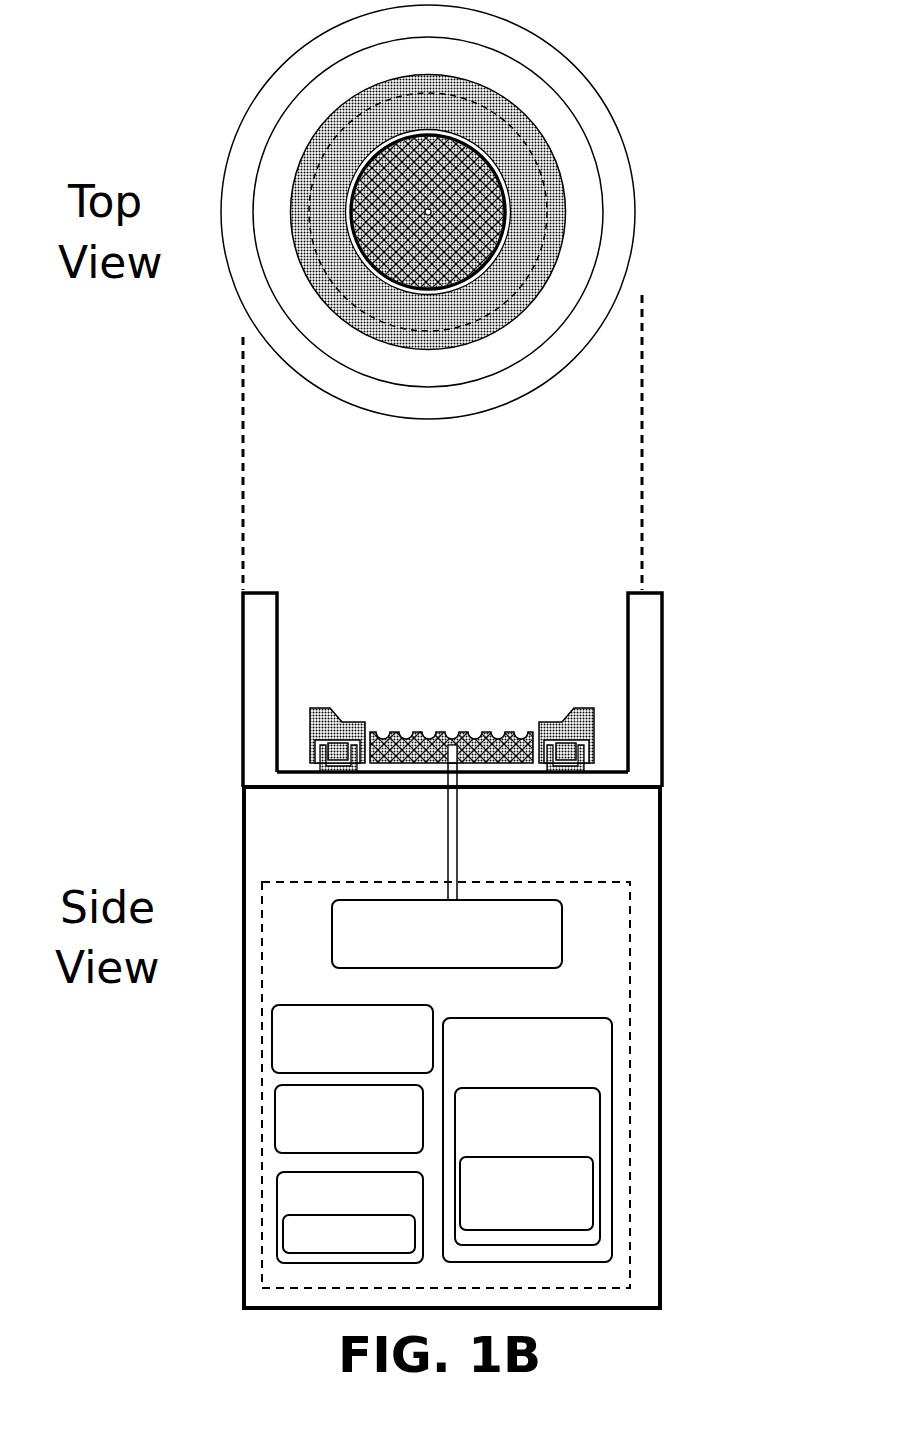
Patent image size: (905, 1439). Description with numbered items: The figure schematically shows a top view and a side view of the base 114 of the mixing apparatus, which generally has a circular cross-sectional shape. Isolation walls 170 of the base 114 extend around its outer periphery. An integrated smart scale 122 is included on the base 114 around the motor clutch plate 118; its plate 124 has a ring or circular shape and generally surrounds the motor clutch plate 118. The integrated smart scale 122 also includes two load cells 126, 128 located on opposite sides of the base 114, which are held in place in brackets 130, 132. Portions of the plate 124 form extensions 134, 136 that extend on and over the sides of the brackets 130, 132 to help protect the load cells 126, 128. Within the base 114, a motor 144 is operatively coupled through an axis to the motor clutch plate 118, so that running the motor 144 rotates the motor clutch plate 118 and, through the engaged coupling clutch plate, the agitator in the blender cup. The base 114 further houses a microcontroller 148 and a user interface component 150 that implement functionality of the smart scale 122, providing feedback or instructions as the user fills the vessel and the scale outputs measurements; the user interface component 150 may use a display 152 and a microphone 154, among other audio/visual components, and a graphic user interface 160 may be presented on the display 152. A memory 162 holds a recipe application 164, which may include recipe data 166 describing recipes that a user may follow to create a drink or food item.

The base 114 is at (652, 297).
The motor clutch plate 118 is at (382, 163).
The integrated smart scale 122 is at (520, 94).
The plate 124 is at (550, 173).
The load cell 126 is at (315, 757).
The load cell 128 is at (623, 770).
The bracket 130 is at (335, 772).
The bracket 132 is at (563, 772).
The extension 134 is at (312, 745).
The extension 136 is at (595, 748).
The motor 144 is at (447, 934).
The microcontroller 148 is at (352, 1039).
The user interface (UI) component 150 is at (349, 1119).
The display 152 is at (350, 1217).
The microphone 154 is at (252, 140).
The graphic user interface (GUI) 160 is at (349, 1234).
The memory 162 is at (527, 1140).
The recipe application 164 is at (527, 1166).
The recipe data 166 is at (526, 1193).
The isolation walls 170 is at (255, 628).